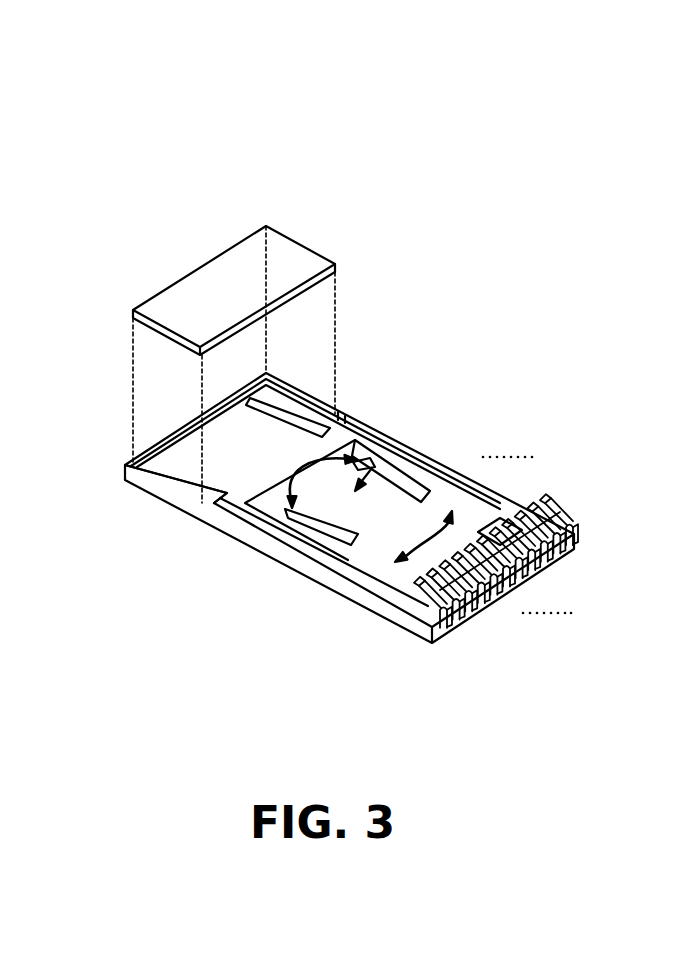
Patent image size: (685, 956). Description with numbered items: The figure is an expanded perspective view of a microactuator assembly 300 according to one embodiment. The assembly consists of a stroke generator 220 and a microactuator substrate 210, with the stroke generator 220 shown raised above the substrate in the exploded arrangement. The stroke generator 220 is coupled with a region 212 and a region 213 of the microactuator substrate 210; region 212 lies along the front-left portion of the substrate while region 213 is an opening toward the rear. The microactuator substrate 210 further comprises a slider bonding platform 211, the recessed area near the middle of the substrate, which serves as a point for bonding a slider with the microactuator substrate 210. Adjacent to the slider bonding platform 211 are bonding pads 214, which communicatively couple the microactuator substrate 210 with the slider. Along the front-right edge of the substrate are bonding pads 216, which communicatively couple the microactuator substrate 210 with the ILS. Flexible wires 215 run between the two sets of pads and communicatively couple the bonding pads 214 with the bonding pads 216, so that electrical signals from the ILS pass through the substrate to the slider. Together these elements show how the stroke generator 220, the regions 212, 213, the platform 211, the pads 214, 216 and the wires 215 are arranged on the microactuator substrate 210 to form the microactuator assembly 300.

The microactuator assembly 300 is at (41, 53).
The microactuator substrate 210 is at (196, 523).
The slider bonding platform 211 is at (360, 487).
The region 212 is at (178, 483).
The region 213 is at (293, 408).
The bonding pads 214 is at (494, 524).
The flexible wires 215 is at (535, 534).
The bonding pads 216 is at (484, 628).
The stroke generator 220 is at (126, 298).